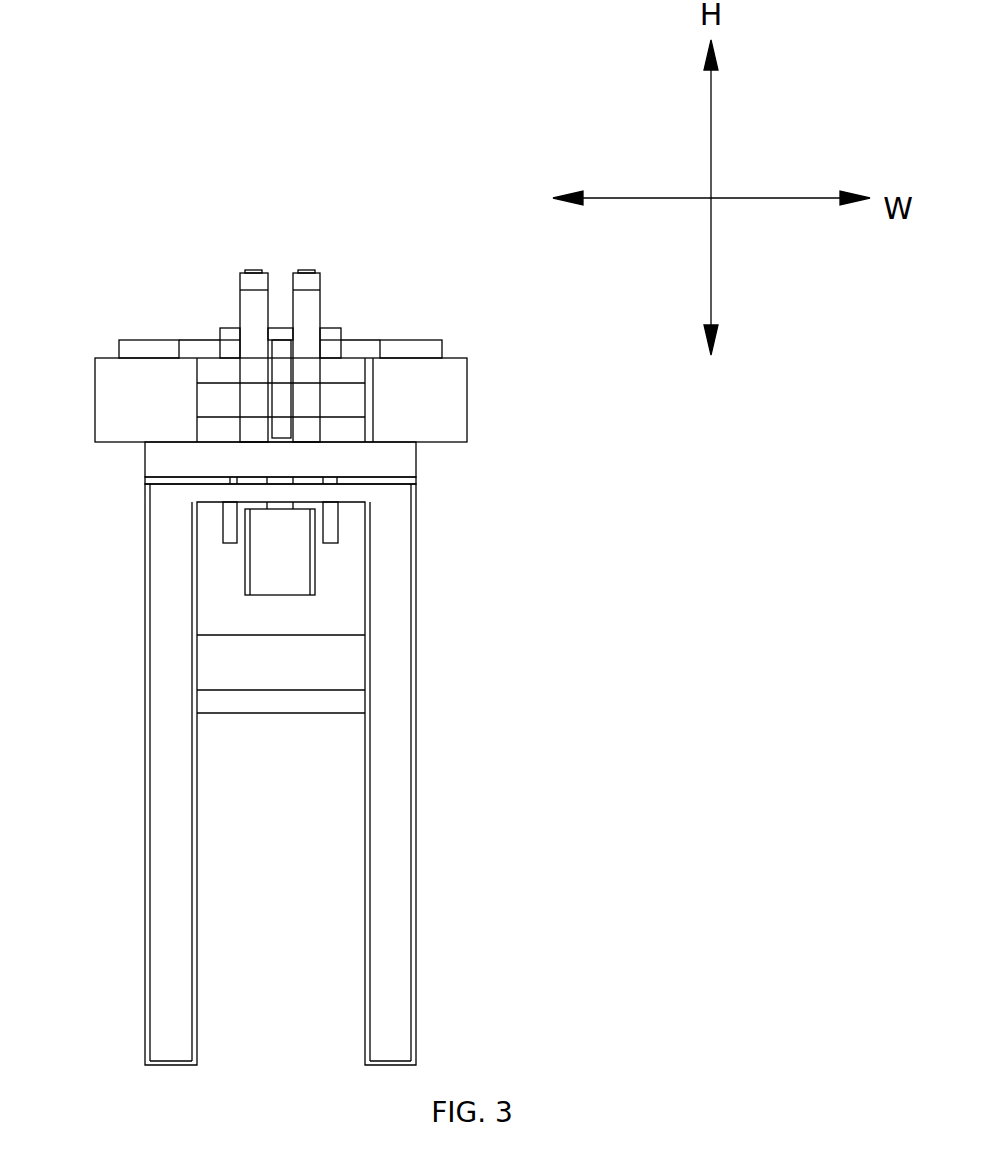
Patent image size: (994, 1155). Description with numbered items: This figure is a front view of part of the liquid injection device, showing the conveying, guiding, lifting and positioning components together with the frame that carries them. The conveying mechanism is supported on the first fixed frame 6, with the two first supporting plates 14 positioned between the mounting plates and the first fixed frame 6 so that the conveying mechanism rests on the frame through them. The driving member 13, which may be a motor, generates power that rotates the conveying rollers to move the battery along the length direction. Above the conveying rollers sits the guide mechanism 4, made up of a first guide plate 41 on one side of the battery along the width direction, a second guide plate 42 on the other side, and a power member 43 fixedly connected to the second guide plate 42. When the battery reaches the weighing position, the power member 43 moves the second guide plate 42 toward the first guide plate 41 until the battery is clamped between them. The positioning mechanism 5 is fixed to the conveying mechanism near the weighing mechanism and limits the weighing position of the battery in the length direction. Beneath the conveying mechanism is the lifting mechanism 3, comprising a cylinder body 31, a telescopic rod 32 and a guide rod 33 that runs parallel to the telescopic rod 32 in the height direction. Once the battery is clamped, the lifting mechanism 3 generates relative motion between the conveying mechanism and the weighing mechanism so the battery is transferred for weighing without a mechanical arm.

The lifting mechanism 3 is at (67, 458).
The guide mechanism 4 is at (398, 212).
The positioning mechanism 5 is at (253, 368).
The first fixed frame 6 is at (390, 682).
The driving member 13 is at (432, 403).
The first supporting plate 14 is at (395, 465).
The cylinder body 31 is at (278, 553).
The telescopic rod 32 is at (278, 505).
The guide rod 33 is at (230, 482).
The first guide plate 41 is at (281, 350).
The second guide plate 42 is at (232, 352).
The power member 43 is at (155, 350).